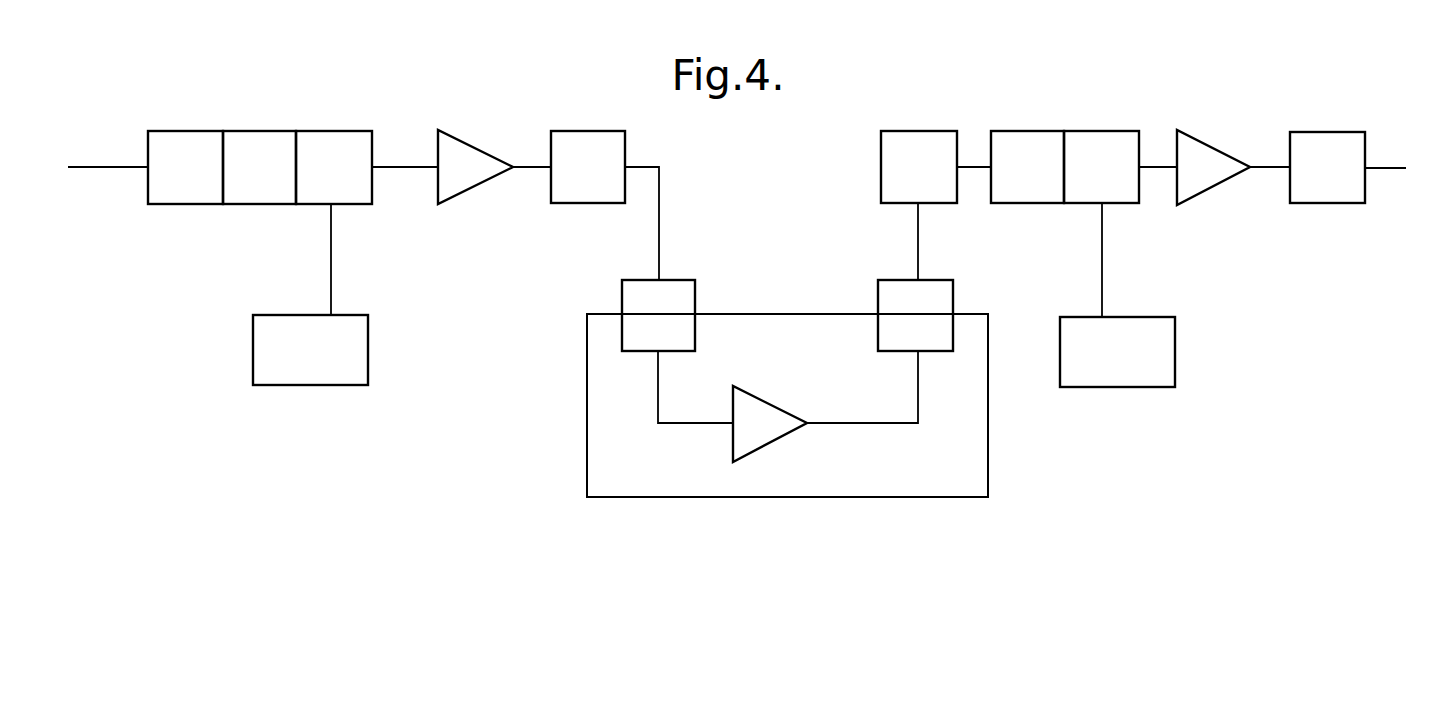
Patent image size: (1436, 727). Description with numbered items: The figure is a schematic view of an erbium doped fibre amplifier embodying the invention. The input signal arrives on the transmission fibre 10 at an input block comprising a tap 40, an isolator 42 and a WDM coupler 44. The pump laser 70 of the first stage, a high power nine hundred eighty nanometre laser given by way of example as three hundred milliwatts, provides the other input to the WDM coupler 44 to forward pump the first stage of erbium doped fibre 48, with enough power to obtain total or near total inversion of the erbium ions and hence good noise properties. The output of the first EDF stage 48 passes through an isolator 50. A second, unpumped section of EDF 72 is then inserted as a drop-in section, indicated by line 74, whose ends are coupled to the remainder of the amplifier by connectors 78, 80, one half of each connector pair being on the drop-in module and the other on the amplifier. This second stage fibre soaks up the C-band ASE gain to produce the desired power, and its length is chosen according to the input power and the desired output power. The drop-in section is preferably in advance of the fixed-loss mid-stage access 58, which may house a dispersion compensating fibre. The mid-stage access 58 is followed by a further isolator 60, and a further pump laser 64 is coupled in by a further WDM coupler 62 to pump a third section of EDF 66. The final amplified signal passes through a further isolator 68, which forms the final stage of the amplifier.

The transmission fibre 10 is at (117, 167).
The tap 40 is at (182, 131).
The isolator 42 is at (259, 131).
The WDM coupler 44 is at (331, 131).
The first stage of erbium doped fibre 48 is at (480, 184).
The isolator 50 is at (588, 131).
The mid-stage access 58 is at (920, 131).
The isolator 60 is at (1031, 131).
The WDM coupler 62 is at (1104, 131).
The pump laser 64 is at (1117, 387).
The third section of EDF 66 is at (1222, 182).
The isolator 68 is at (1330, 203).
The pump laser 70 is at (312, 385).
The unpumped section of EDF 72 is at (785, 435).
The drop-in section line 74 is at (918, 497).
The connector 78 is at (672, 280).
The connector 80 is at (897, 280).